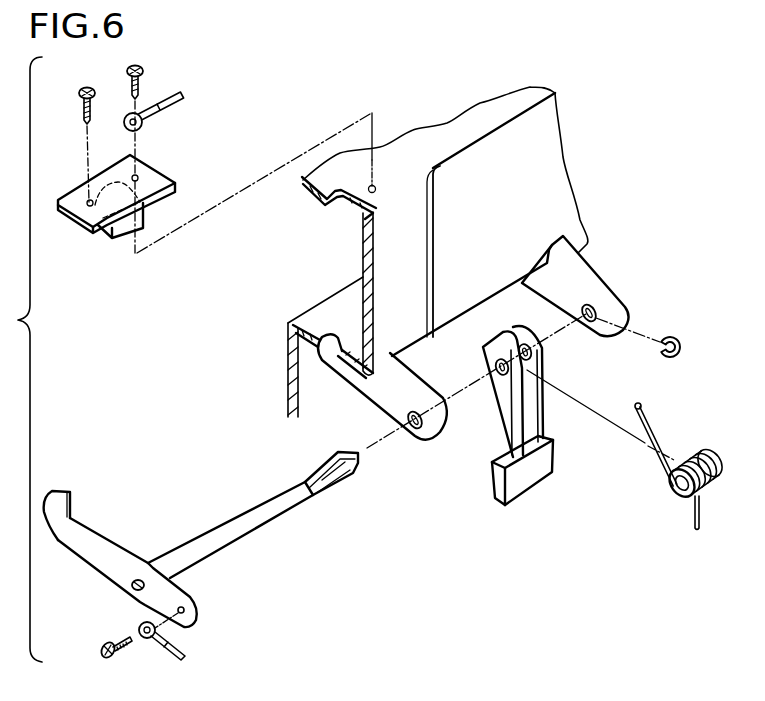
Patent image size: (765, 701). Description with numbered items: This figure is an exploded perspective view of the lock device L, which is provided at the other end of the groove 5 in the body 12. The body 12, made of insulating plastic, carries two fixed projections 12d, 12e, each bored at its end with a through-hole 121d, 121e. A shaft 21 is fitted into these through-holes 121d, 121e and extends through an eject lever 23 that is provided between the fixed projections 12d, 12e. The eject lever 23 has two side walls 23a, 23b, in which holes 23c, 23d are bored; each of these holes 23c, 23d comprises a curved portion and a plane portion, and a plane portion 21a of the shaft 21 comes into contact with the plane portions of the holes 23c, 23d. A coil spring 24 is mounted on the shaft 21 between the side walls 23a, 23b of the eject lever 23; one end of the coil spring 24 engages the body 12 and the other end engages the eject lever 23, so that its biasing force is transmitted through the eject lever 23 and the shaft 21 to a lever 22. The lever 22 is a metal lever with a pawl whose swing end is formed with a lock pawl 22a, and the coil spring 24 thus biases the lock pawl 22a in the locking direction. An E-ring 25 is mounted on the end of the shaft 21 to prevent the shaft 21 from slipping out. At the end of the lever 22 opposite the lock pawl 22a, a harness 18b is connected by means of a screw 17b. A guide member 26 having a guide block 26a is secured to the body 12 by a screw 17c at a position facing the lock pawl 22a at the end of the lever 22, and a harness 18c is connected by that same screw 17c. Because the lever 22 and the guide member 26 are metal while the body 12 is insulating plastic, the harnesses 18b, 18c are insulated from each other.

The groove 5 is at (332, 311).
The body 12 is at (509, 227).
The fixed projection 12d is at (427, 442).
The fixed projection 12e is at (608, 293).
The through-hole 121d is at (416, 433).
The through-hole 121e is at (597, 309).
The screw 17b is at (105, 643).
The screw 17c is at (80, 100).
The harness 18b is at (187, 646).
The harness 18c is at (173, 105).
The shaft 21 is at (230, 525).
The plane portion 21a is at (332, 488).
The lever 22 is at (95, 545).
The lock pawl 22a is at (53, 495).
The eject lever 23 is at (528, 488).
The side wall 23a is at (507, 395).
The side wall 23b is at (532, 397).
The hole 23c is at (496, 367).
The hole 23d is at (531, 359).
The coil spring 24 is at (678, 497).
The E-ring 25 is at (678, 360).
The guide member 26 is at (70, 213).
The guide block 26a is at (103, 233).
The lock device L is at (581, 503).